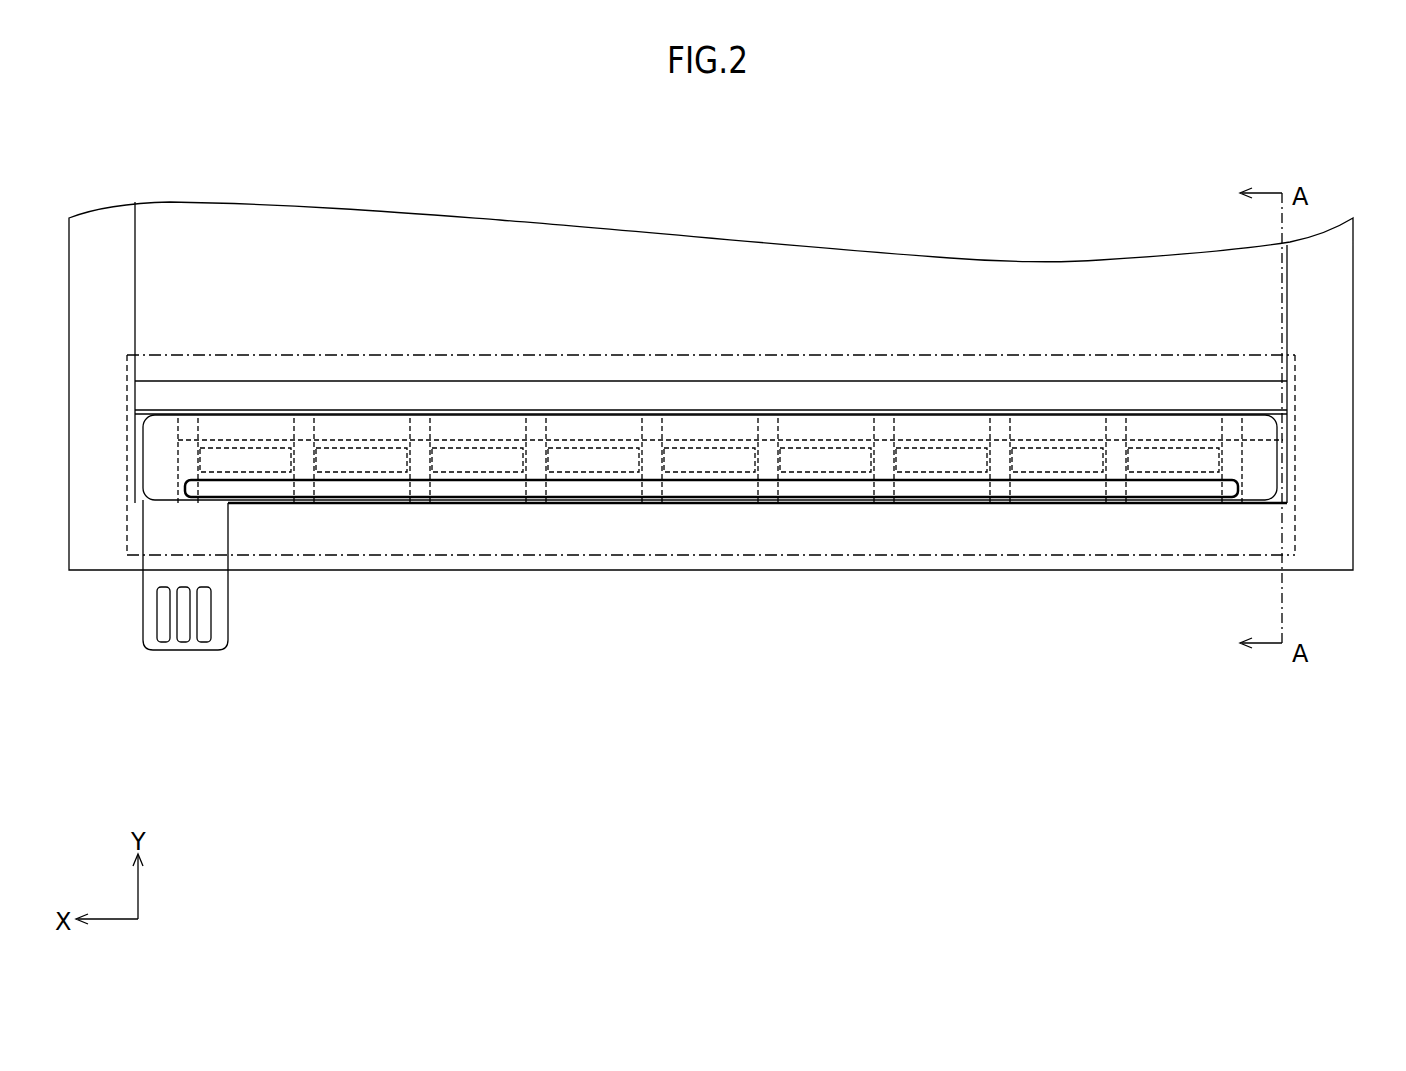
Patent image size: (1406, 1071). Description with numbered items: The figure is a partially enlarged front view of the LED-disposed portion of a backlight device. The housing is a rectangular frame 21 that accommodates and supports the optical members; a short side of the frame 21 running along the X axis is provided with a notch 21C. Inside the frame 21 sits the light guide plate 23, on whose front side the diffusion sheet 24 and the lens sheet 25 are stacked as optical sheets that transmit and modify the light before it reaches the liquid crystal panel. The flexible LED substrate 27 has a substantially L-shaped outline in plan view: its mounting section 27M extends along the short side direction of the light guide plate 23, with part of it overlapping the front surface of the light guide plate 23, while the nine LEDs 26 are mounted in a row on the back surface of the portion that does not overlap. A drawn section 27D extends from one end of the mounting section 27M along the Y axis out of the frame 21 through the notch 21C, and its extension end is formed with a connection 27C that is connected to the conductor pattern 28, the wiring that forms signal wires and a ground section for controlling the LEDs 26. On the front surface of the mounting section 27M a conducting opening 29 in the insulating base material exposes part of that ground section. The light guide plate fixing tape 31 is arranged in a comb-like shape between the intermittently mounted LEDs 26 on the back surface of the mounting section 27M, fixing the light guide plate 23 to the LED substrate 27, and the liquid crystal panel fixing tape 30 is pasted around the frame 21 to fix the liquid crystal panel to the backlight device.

The frame 21 is at (1340, 550).
The notch 21C is at (213, 543).
The light guide plate 23 is at (140, 423).
The diffusion sheet 24 is at (155, 397).
The lens sheet 25 is at (155, 368).
The LED 26 is at (737, 503).
The LED substrate 27 is at (149, 643).
The drawn section 27D is at (148, 612).
The connection 27C is at (205, 630).
The mounting section 27M is at (885, 462).
The conductor pattern 28 is at (1003, 487).
The conducting opening 29 is at (1122, 492).
The liquid crystal panel fixing tape 30 is at (575, 555).
The light guide plate fixing tape 31 is at (423, 505).